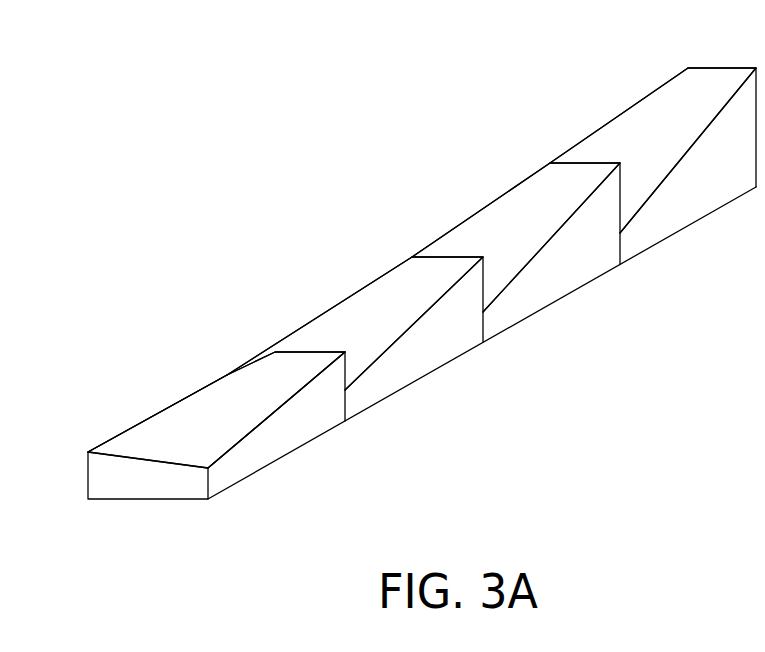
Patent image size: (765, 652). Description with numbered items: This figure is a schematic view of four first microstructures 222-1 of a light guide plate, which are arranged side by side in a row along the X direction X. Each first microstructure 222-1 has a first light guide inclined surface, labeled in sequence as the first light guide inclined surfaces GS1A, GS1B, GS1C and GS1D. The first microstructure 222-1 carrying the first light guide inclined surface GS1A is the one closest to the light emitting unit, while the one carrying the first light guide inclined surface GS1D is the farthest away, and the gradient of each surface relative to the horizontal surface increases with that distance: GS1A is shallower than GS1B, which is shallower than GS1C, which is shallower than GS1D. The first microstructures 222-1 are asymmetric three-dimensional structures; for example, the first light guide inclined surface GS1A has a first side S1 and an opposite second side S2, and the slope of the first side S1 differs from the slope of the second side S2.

The first microstructure 222-1 is at (280, 460).
The first light guide inclined surface GS1A is at (224, 408).
The first light guide inclined surface GS1B is at (357, 328).
The first light guide inclined surface GS1C is at (496, 237).
The first light guide inclined surface GS1D is at (640, 145).
The first side S1 is at (284, 412).
The second side S2 is at (178, 397).
The X direction X is at (627, 427).